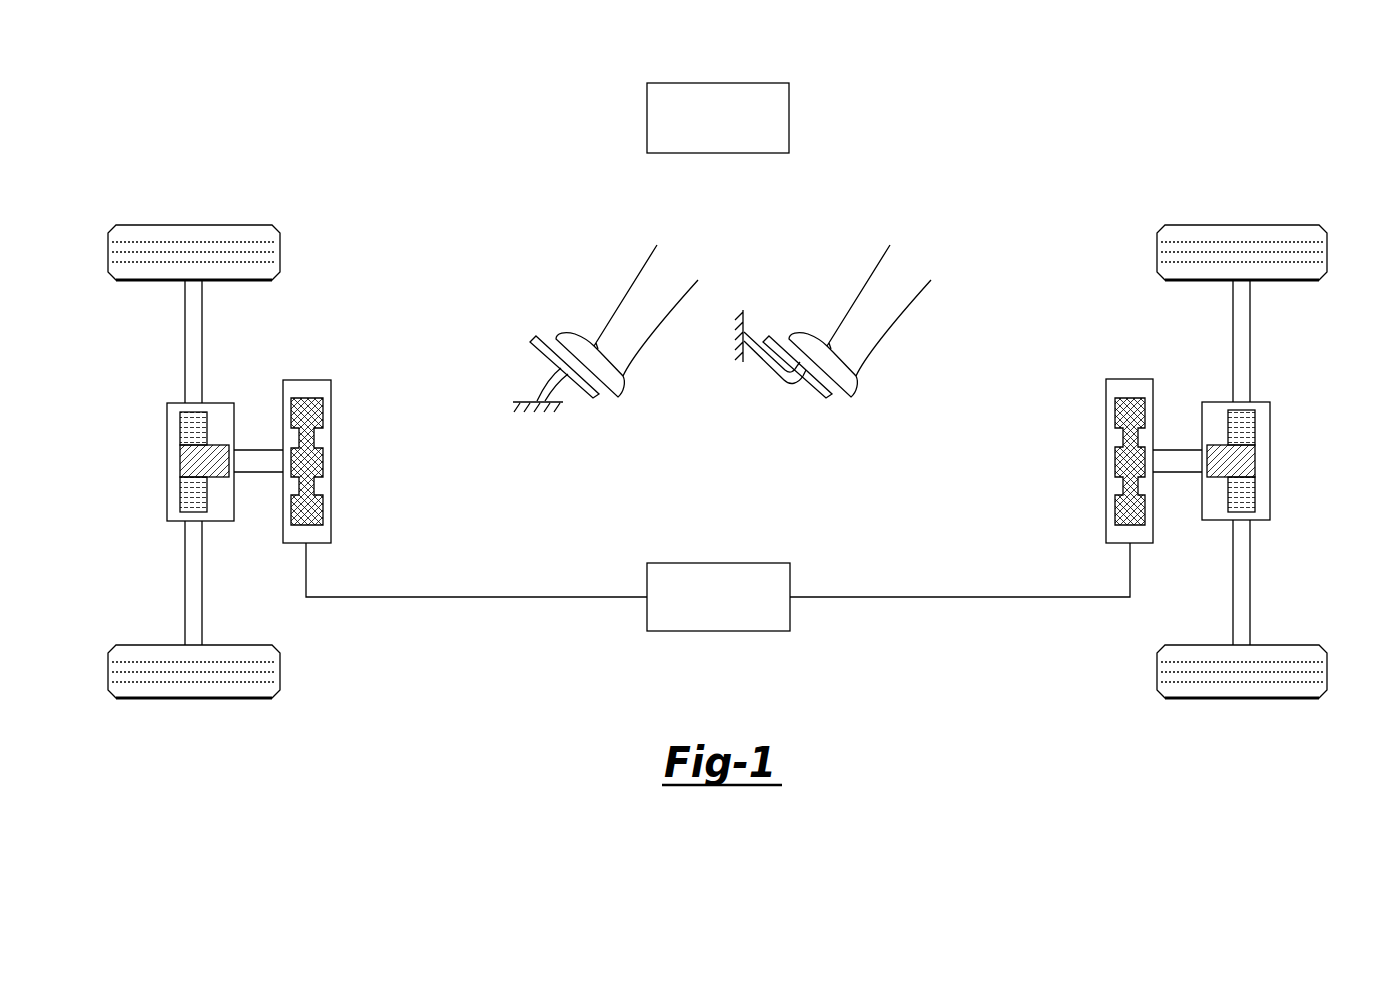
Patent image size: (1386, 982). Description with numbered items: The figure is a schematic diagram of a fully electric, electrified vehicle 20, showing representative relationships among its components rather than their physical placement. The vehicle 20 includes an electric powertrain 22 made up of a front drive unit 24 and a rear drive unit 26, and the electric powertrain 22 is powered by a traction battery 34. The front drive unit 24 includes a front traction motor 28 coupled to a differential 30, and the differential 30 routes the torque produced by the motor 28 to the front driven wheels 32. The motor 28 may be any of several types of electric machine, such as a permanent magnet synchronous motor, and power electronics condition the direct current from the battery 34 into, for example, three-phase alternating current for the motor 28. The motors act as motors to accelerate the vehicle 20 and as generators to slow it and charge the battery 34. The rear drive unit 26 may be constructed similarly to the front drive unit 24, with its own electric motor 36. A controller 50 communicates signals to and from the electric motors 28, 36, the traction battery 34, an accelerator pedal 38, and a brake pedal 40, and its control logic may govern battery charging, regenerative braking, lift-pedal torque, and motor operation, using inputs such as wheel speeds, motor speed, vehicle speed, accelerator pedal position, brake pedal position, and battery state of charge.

The electrified vehicle 20 is at (948, 190).
The electric powertrain 22 is at (426, 282).
The front drive unit 24 is at (368, 368).
The rear drive unit 26 is at (1328, 358).
The front traction motor 28 is at (323, 410).
The differential 30 is at (167, 459).
The front driven wheels 32 is at (280, 250).
The traction battery 34 is at (790, 572).
The electric motor 36 is at (1106, 461).
The accelerator pedal 38 is at (535, 357).
The brake pedal 40 is at (835, 397).
The controller 50 is at (790, 118).